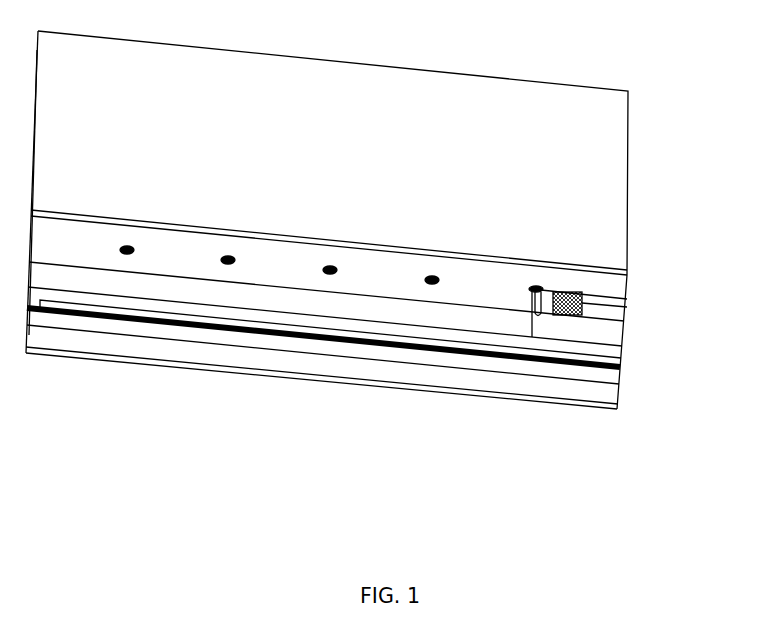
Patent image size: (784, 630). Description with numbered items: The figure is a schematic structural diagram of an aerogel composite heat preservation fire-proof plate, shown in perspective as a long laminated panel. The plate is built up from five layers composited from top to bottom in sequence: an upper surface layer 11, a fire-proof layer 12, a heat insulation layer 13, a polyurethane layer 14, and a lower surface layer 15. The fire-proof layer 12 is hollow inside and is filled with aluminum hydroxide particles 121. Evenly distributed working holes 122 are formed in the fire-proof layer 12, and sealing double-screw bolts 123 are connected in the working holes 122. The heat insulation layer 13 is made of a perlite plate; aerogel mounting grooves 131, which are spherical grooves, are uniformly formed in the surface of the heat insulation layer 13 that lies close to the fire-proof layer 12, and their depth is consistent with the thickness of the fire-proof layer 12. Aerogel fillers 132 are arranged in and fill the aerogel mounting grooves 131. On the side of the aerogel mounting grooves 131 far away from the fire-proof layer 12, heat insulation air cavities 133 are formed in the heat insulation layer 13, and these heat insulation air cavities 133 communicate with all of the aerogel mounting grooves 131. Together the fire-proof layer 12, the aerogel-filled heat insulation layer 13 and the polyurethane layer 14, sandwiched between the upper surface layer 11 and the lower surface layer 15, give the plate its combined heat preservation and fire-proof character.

The upper surface layer 11 is at (603, 192).
The fire-proof layer 12 is at (487, 281).
The working holes 122 is at (432, 280).
The sealing double-screw bolts 123 is at (533, 288).
The aluminum hydroxide particles 121 is at (595, 295).
The aerogel fillers 132 is at (553, 315).
The aerogel mounting grooves 131 is at (538, 318).
The heat insulation air cavities 133 is at (230, 327).
The heat insulation layer 13 is at (452, 340).
The polyurethane layer 14 is at (405, 357).
The lower surface layer 15 is at (323, 375).